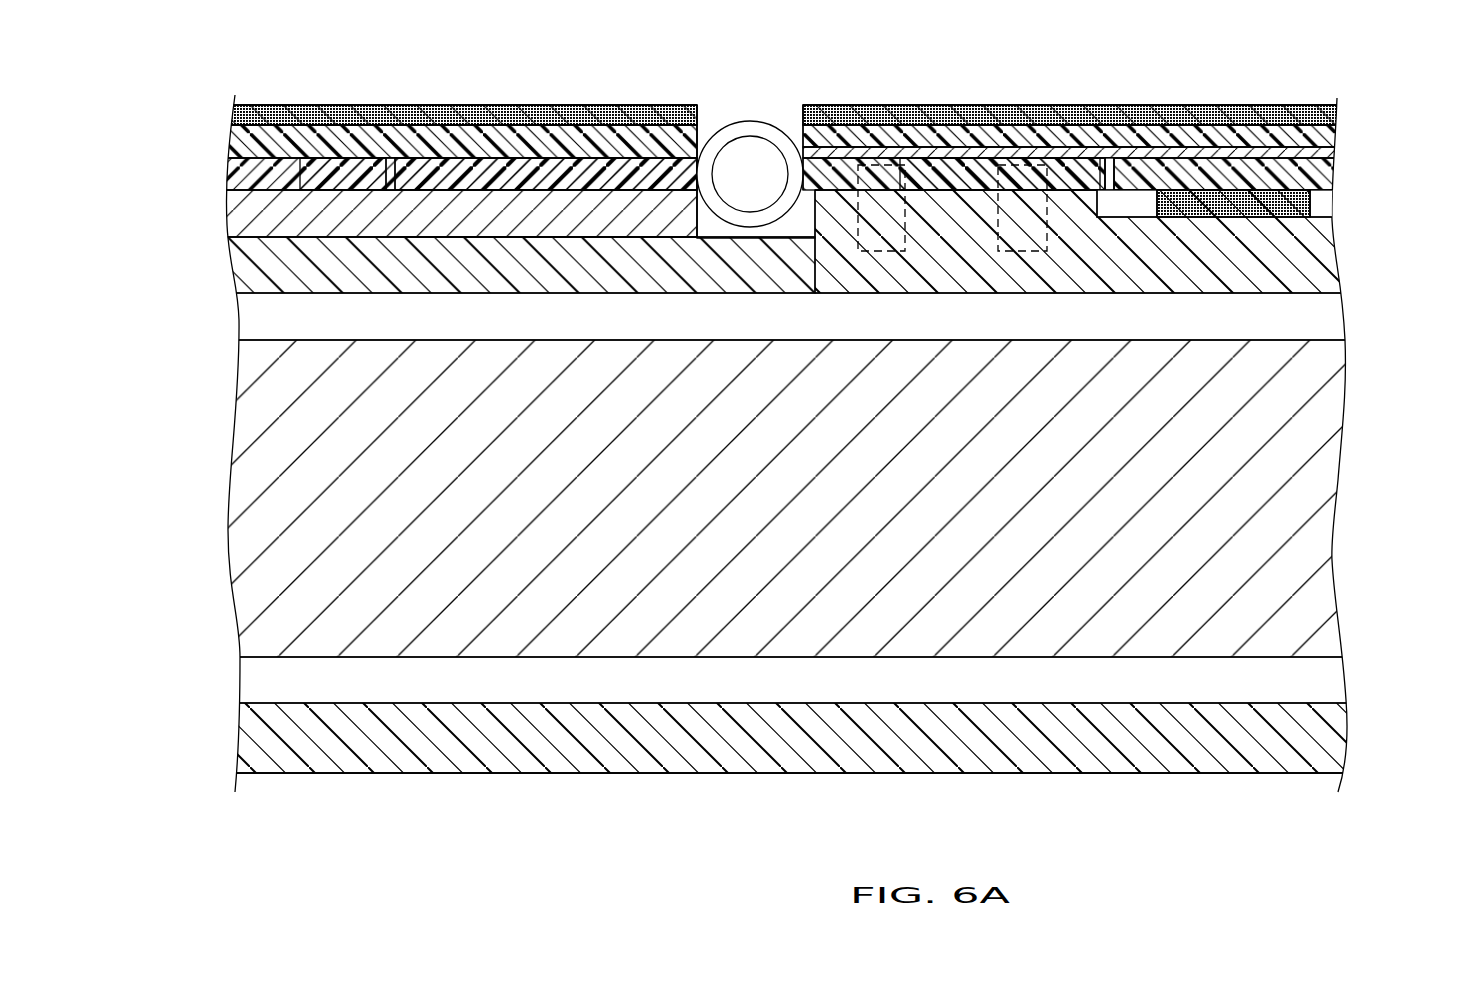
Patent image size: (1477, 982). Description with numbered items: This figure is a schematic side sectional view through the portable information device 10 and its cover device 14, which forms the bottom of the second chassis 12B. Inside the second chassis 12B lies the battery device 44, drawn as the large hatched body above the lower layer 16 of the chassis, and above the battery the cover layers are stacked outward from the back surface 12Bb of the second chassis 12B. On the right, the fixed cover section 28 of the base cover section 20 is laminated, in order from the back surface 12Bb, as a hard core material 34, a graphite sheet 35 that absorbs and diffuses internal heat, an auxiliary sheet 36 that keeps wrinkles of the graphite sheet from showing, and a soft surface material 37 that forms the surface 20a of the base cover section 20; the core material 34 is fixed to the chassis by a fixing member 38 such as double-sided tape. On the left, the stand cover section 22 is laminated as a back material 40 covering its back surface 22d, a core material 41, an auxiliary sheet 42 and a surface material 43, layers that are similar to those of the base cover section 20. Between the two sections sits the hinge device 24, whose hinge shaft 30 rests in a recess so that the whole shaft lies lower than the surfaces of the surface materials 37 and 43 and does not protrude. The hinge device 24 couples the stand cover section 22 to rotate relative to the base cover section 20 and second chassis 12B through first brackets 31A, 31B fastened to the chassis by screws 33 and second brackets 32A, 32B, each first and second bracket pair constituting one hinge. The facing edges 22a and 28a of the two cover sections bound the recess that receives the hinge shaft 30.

The portable information device 10 is at (135, 55).
The second chassis 12B is at (486, 790).
The back surface of the second chassis 12Bb is at (540, 232).
The cover device 14 is at (350, 90).
The base layer 16 is at (793, 757).
The base cover section 20 is at (1182, 90).
The surface of the base cover section 20a is at (1283, 105).
The stand cover section 22 is at (160, 95).
The side surface of first laminated body 22a is at (706, 125).
The back surface of the stand cover section 22d is at (283, 243).
The hinge device 24 is at (769, 100).
The fixed cover section 28 is at (1410, 93).
The side surface of second laminated body 28a is at (795, 122).
The hinge shaft 30 is at (753, 163).
The first bracket 31A is at (965, 160).
The first bracket 31B is at (1109, 174).
The second bracket 32A is at (431, 165).
The second bracket 32B is at (390, 174).
The screw 33 is at (905, 155).
The core material 34 is at (1331, 175).
The graphite sheet 35 is at (1334, 153).
The auxiliary sheet 36 is at (1335, 138).
The surface material 37 is at (1336, 114).
The fixing member 38 is at (1267, 212).
The back material 40 is at (238, 212).
The core material 41 is at (236, 172).
The auxiliary sheet 42 is at (228, 140).
The surface material 43 is at (230, 114).
The battery device 44 is at (245, 525).